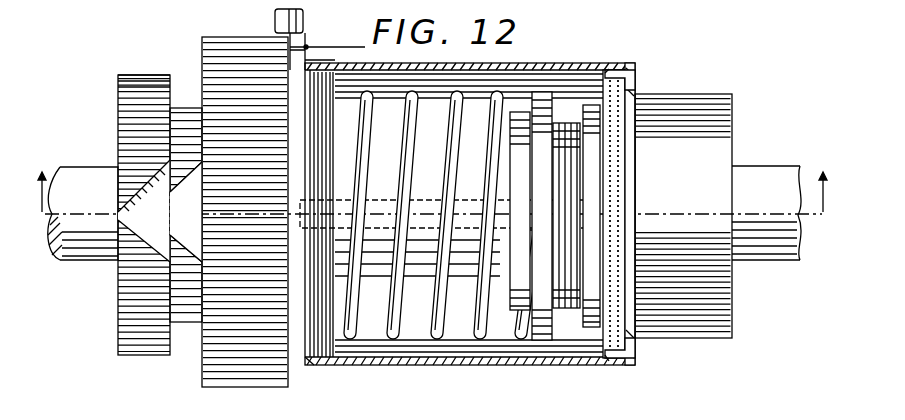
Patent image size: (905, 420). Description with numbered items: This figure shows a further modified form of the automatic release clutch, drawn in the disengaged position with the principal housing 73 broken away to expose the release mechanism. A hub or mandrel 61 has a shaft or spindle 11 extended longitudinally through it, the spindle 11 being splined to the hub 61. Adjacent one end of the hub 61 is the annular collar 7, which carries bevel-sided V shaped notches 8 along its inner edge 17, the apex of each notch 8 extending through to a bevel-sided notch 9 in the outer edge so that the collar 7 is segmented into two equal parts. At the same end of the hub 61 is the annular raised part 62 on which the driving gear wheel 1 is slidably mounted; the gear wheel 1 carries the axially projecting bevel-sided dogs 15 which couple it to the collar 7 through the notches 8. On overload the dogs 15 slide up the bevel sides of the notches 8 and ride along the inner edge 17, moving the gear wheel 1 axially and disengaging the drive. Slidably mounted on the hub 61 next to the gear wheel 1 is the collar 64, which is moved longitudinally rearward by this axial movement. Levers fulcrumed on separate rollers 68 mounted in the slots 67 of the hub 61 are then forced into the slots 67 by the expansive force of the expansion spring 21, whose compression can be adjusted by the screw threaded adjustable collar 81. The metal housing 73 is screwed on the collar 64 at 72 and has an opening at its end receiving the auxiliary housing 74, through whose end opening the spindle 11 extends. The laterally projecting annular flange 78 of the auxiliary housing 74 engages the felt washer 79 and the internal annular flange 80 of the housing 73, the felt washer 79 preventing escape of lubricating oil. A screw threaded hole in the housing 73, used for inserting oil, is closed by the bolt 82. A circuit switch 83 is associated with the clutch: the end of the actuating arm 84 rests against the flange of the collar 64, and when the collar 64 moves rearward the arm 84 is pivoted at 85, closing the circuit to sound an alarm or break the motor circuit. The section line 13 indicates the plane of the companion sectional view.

The gear wheel 1 is at (245, 366).
The collar 7 is at (130, 92).
The V shaped notches 8 is at (146, 188).
The bevel-sided notch 9 is at (122, 210).
The shaft or spindle 11 is at (108, 246).
The section line 13 is at (433, 176).
The V shaped lugs or bevel-sided dogs 15 is at (188, 238).
The inner edge of the collar 17 is at (164, 92).
The expansion spring 21 is at (484, 334).
The hub or mandrel 61 is at (457, 298).
The annular raised part 62 is at (192, 310).
The collar 64 is at (307, 366).
The slot 67 is at (424, 234).
The rollers 68 is at (591, 328).
The screw connection 72 is at (338, 360).
The housing 73 is at (545, 366).
The auxiliary housing 74 is at (710, 132).
The annular flange 78 is at (614, 68).
The felt washer 79 is at (636, 70).
The internal annular flange 80 is at (634, 88).
The adjustable collar 81 is at (545, 94).
The bolt 82 is at (476, 65).
The circuit switch 83 is at (275, 22).
The actuating arm 84 is at (306, 47).
The pivot 85 is at (303, 30).